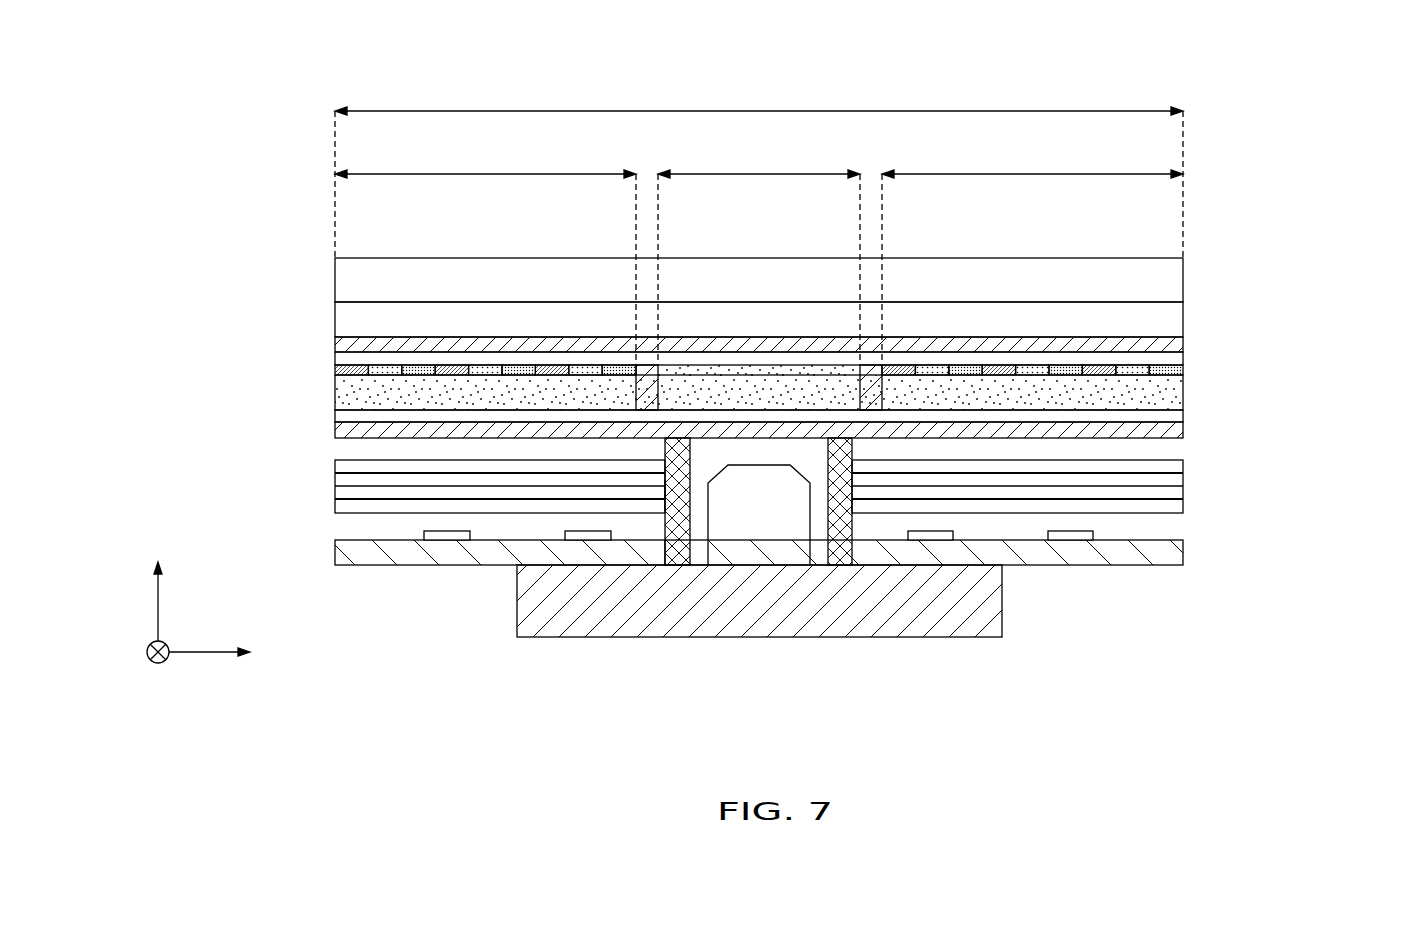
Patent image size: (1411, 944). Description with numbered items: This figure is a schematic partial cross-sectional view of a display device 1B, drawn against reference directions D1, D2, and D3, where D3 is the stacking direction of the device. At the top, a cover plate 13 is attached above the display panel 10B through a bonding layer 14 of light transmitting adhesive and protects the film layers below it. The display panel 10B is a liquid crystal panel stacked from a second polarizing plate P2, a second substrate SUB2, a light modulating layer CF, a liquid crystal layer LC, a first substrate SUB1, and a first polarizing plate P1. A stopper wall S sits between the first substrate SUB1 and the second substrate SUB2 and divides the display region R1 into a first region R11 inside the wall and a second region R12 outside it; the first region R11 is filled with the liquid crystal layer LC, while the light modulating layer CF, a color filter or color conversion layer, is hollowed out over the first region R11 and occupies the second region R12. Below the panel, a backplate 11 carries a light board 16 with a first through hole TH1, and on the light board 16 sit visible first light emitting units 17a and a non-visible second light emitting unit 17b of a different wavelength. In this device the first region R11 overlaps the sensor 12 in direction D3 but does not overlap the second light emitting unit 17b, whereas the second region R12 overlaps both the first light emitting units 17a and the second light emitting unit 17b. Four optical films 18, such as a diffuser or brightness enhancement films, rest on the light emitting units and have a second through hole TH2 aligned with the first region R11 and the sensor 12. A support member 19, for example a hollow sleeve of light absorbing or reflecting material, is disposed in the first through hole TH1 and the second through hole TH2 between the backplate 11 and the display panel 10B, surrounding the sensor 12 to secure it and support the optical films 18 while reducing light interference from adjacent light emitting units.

The display device 1B is at (1273, 151).
The cover plate 13 is at (353, 279).
The bonding layer 14 is at (353, 323).
The display panel 10B is at (334, 340).
The second polarizing plate P2 is at (1172, 346).
The second substrate SUB2 is at (1165, 358).
The light modulating layer CF is at (1183, 370).
The liquid crystal layer LC is at (1165, 397).
The stopper wall S is at (867, 384).
The first substrate SUB1 is at (1165, 417).
The first polarizing plate P1 is at (1165, 430).
The optical film 18 is at (1165, 466).
The support member 19 is at (843, 560).
The sensor 12 is at (774, 536).
The first through hole TH1 is at (666, 556).
The second through hole TH2 is at (666, 494).
The light board 16 is at (1165, 555).
The first light emitting units 17a is at (447, 541).
The second light emitting unit 17b is at (587, 541).
The backplate 11 is at (803, 620).
The display region R1 is at (759, 166).
The first region R11 is at (759, 251).
The second region R12 is at (759, 251).
The direction D1 is at (227, 652).
The direction D2 is at (142, 669).
The direction D3 is at (158, 585).